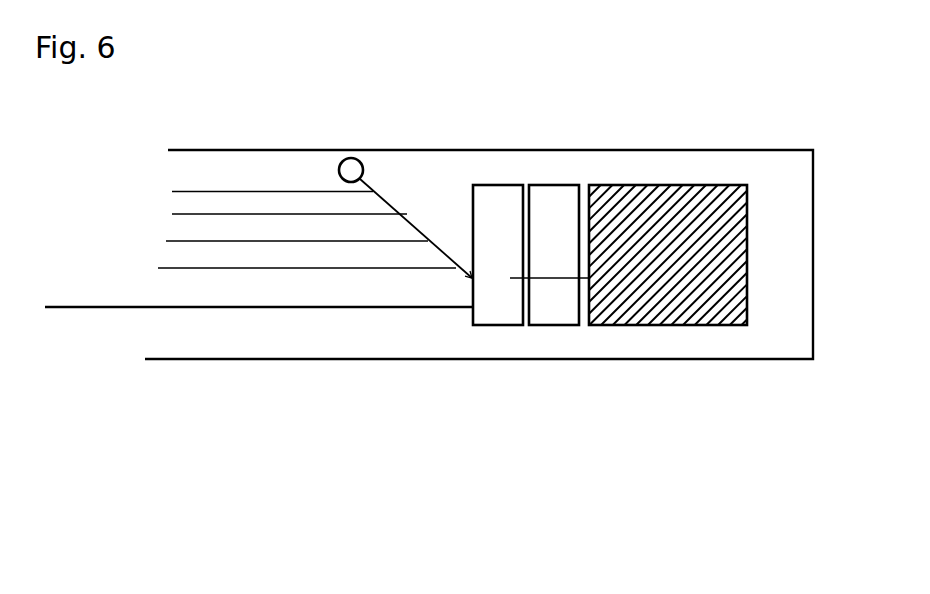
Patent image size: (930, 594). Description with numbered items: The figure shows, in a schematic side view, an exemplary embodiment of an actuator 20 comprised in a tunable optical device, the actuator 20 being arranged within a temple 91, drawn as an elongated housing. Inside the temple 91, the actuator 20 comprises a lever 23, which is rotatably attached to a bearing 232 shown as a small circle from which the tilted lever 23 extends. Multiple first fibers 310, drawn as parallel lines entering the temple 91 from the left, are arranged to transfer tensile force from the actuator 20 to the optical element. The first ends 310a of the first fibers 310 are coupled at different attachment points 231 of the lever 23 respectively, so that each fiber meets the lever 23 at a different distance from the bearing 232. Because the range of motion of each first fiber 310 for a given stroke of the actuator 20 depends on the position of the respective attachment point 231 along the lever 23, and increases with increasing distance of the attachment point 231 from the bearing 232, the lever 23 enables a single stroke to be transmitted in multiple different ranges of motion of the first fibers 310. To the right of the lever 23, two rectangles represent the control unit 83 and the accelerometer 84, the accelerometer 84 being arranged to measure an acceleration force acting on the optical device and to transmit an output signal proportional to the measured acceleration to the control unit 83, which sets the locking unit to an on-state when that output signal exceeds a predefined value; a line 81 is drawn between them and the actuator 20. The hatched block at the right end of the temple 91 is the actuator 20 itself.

The actuator 20 is at (690, 254).
The lever 23 is at (400, 247).
The attachment point 231 is at (428, 238).
The bearing 232 is at (350, 158).
The optical axis 81 is at (393, 308).
The control unit 83 is at (493, 308).
The accelerometer 84 is at (567, 303).
The temple 91 is at (627, 360).
The first fibers 310 is at (252, 192).
The first ends of the first fibers 310a is at (337, 214).